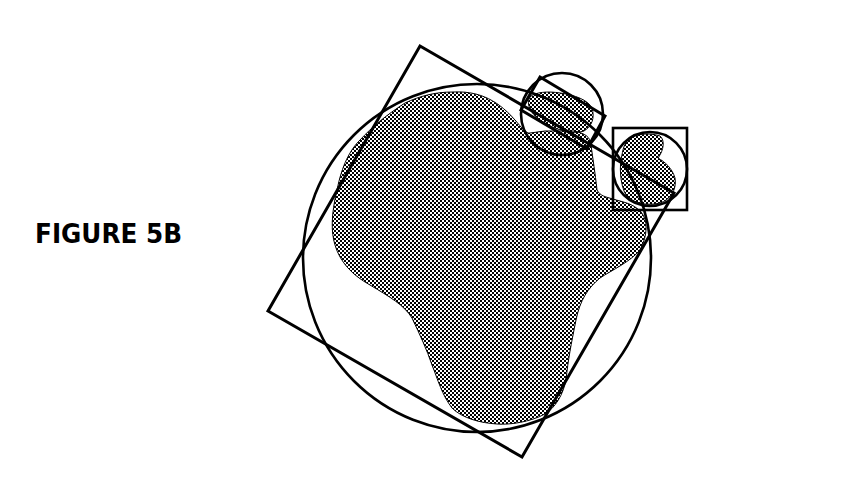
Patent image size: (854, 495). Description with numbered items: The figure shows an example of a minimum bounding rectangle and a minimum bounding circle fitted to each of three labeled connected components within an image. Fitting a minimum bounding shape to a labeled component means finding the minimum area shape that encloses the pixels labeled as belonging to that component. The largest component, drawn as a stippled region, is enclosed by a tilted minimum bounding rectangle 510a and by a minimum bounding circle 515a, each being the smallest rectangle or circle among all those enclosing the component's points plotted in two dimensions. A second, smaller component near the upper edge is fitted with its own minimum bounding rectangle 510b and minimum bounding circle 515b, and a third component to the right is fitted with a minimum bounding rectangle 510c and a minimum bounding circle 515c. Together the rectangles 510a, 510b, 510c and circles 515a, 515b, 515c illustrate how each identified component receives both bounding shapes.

The minimum bounding rectangle 510a is at (277, 292).
The minimum bounding circle 515a is at (370, 395).
The minimum bounding rectangle 510b is at (540, 78).
The minimum bounding circle 515b is at (590, 95).
The minimum bounding rectangle 510c is at (685, 92).
The minimum bounding circle 515c is at (687, 148).